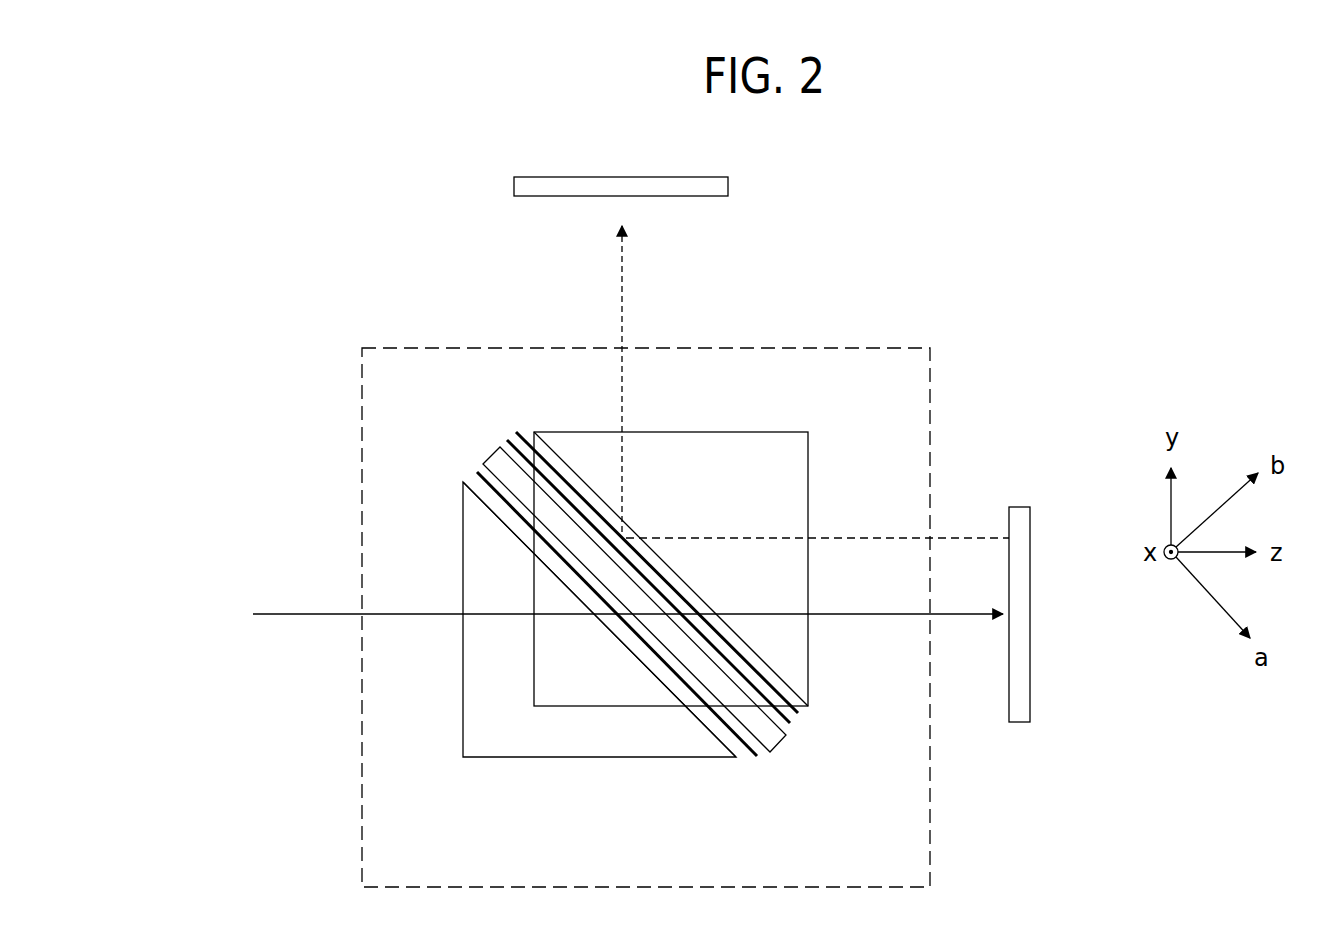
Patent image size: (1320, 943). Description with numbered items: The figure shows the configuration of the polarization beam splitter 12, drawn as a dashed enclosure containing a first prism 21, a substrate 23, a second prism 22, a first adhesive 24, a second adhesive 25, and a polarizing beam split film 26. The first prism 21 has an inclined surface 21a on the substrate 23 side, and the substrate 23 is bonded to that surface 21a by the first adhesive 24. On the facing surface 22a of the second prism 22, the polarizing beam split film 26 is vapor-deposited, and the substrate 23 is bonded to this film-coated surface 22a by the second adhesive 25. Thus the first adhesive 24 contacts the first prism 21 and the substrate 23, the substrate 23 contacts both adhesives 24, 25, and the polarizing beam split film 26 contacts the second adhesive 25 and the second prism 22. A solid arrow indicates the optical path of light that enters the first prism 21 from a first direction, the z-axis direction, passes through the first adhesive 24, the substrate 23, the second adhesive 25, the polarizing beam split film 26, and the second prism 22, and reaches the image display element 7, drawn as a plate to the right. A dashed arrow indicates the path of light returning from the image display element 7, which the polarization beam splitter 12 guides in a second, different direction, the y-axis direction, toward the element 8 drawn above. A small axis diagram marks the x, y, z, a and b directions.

The image display element 7 is at (1020, 525).
The light receiving element 8 is at (717, 192).
The polarization beam splitter 12 is at (930, 385).
The first prism 21 is at (548, 759).
The surface of the first prism 21a is at (615, 638).
The second prism 22 is at (808, 445).
The surface of the second prism 22a is at (698, 595).
The substrate 23 is at (772, 752).
The first adhesive 24 is at (478, 476).
The second adhesive 25 is at (505, 438).
The polarizing beam split film 26 is at (800, 718).